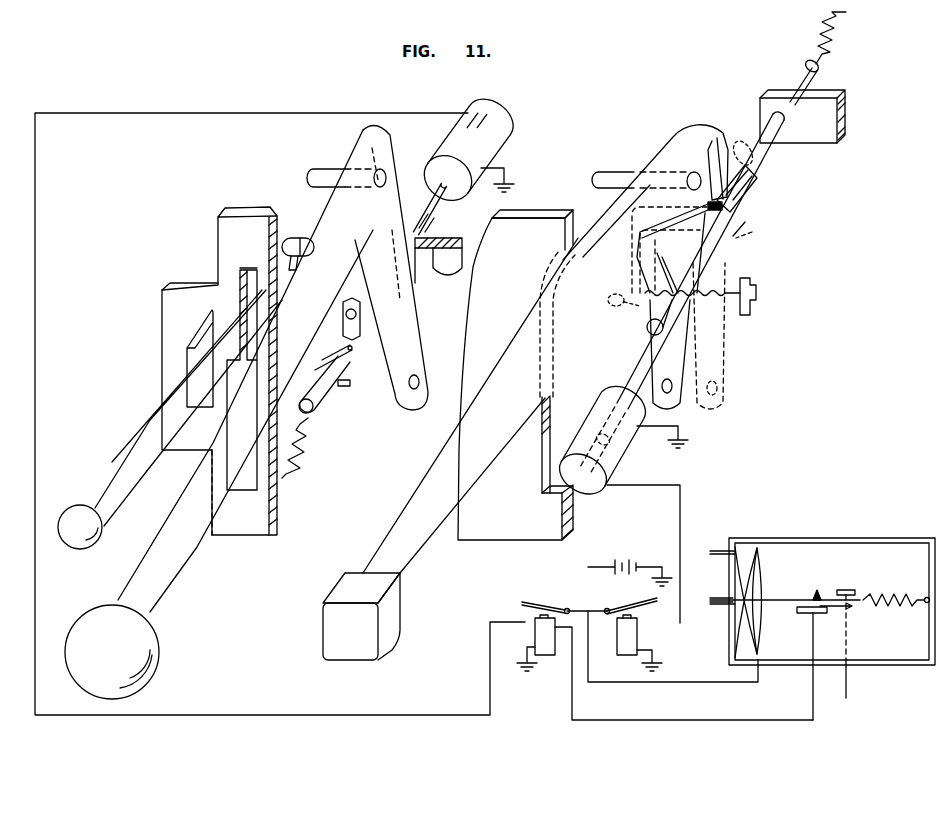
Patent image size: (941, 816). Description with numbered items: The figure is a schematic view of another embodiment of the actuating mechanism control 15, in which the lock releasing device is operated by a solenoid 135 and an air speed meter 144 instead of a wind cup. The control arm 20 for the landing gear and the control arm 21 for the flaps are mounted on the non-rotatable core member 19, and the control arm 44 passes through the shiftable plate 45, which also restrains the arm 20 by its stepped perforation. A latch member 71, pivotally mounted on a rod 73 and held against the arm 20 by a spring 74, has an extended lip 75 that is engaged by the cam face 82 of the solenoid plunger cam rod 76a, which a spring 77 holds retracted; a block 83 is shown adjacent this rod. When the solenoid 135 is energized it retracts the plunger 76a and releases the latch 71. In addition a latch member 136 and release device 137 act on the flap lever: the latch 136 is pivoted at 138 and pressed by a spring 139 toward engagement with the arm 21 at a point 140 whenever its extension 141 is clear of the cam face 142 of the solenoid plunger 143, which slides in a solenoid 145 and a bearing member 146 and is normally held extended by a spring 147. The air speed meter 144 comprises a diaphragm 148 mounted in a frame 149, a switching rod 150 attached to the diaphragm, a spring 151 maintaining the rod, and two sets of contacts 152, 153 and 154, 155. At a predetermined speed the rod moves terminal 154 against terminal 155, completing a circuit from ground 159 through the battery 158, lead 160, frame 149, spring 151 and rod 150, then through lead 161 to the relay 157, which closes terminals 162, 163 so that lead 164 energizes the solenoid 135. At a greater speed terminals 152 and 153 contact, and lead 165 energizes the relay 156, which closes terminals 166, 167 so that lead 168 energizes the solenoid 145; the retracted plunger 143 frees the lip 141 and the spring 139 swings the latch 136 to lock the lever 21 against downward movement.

The actuating mechanism control 15 is at (262, 96).
The core member 19 is at (328, 169).
The control arm 20 is at (193, 540).
The control arm 21 is at (412, 507).
The control arm 44 is at (146, 422).
The plate 45 is at (218, 222).
The latch member 71 is at (290, 238).
The rod 73 is at (346, 332).
The spring 74 is at (272, 249).
The extended lip 75 is at (360, 384).
The solenoid plunger cam rod 76a is at (428, 240).
The spring 77 is at (298, 458).
The cam face 82 is at (350, 350).
The stop block 83 is at (422, 268).
The solenoid 135 is at (484, 106).
The latch member 136 is at (637, 325).
The latch release device 137 is at (778, 166).
The pivot 138 is at (752, 232).
The spring 139 is at (736, 288).
The engagement point 140 is at (610, 307).
The extension 141 is at (728, 138).
The cam face 142 is at (746, 182).
The solenoid plunger 143 is at (792, 84).
The air speed meter 144 is at (858, 526).
The solenoid 145 is at (620, 470).
The bearing member 146 is at (826, 96).
The spring 147 is at (822, 44).
The diaphragm 148 is at (765, 560).
The frame 149 is at (730, 614).
The switching rod 150 is at (792, 598).
The spring 151 is at (900, 596).
The terminal 152 is at (822, 592).
The terminal 153 is at (848, 590).
The terminal 154 is at (806, 616).
The terminal 155 is at (810, 630).
The relay 156 is at (634, 638).
The relay 157 is at (540, 638).
The battery 158 is at (636, 562).
The ground 159 is at (660, 574).
The lead 160 is at (580, 686).
The lead 161 is at (724, 720).
The terminal 162 is at (546, 588).
The terminal 163 is at (530, 622).
The lead 164 is at (386, 716).
The lead 165 is at (834, 696).
The terminal 166 is at (634, 588).
The terminal 167 is at (656, 620).
The lead 168 is at (680, 506).